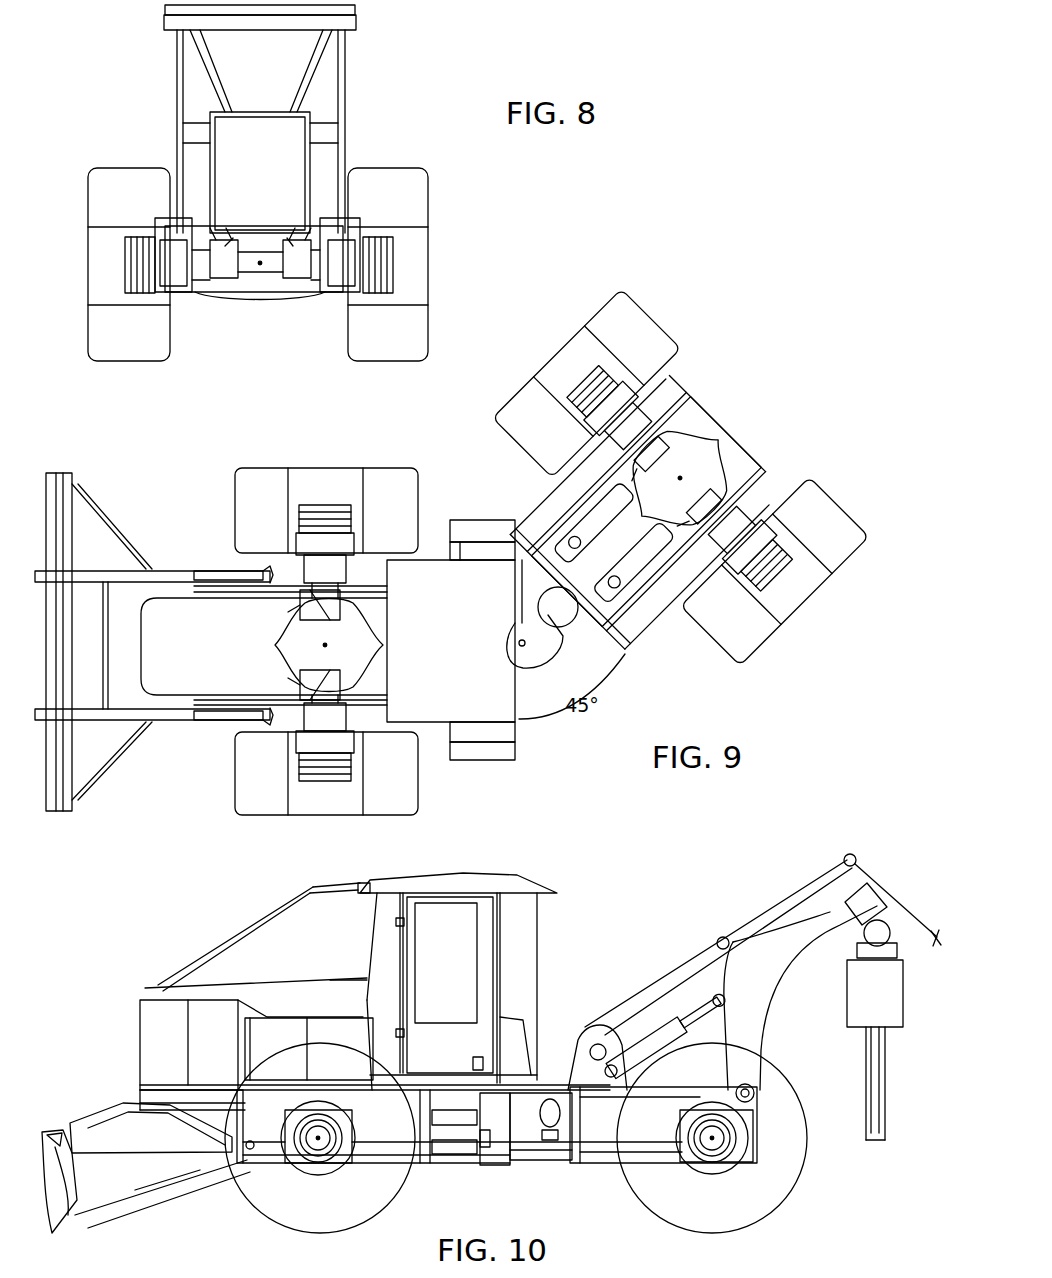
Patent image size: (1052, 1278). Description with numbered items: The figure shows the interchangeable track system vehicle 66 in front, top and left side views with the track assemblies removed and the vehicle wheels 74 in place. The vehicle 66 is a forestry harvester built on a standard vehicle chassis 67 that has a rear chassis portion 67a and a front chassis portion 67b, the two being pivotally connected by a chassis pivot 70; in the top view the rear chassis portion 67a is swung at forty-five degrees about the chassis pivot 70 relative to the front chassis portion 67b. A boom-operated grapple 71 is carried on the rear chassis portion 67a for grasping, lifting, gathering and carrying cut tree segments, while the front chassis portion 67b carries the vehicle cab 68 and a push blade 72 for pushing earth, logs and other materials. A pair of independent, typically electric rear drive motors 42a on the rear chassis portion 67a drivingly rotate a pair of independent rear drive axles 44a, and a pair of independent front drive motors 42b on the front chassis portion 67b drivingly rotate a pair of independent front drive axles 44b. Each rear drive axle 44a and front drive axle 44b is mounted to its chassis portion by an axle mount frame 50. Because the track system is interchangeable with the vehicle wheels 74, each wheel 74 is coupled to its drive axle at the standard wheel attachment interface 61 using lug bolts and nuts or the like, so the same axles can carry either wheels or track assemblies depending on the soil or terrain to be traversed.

In FIG. 9, the rear drive motor 42a is at (697, 445).
In FIG. 8, the front drive motor 42b is at (222, 238).
In FIG. 9, the front drive motor 42b is at (292, 615).
In FIG. 9, the rear drive axle 44a is at (662, 430).
In FIG. 8, the front drive axle 44b is at (205, 243).
In FIG. 9, the front drive axle 44b is at (336, 652).
In FIG. 8, the axle mount frame 50 is at (166, 213).
In FIG. 9, the axle mount frame 50 is at (365, 538).
In FIG. 10, the axle mount frame 50 is at (353, 1125).
In FIG. 8, the wheel attachment interface 61 is at (125, 264).
In FIG. 9, the wheel attachment interface 61 is at (324, 505).
In FIG. 10, the wheel attachment interface 61 is at (323, 1160).
In FIG. 8, the vehicle 66 is at (167, 80).
In FIG. 9, the vehicle 66 is at (85, 473).
In FIG. 10, the vehicle 66 is at (593, 873).
In FIG. 8, the vehicle chassis 67 is at (323, 210).
In FIG. 9, the vehicle chassis 67 is at (168, 582).
In FIG. 10, the vehicle chassis 67 is at (137, 1013).
In FIG. 9, the rear chassis portion 67a is at (630, 655).
In FIG. 10, the rear chassis portion 67a is at (652, 990).
In FIG. 8, the front chassis portion 67b is at (193, 220).
In FIG. 9, the front chassis portion 67b is at (178, 684).
In FIG. 10, the front chassis portion 67b is at (143, 1043).
In FIG. 8, the vehicle cab 68 is at (357, 13).
In FIG. 10, the vehicle cab 68 is at (230, 937).
In FIG. 9, the chassis pivot 70 is at (512, 655).
In FIG. 10, the chassis pivot 70 is at (526, 1126).
In FIG. 10, the boom-operated grapple 71 is at (758, 930).
In FIG. 9, the push blade 72 is at (66, 811).
In FIG. 10, the push blade 72 is at (90, 1117).
In FIG. 8, the vehicle wheel 74 is at (353, 342).
In FIG. 9, the vehicle wheel 74 is at (241, 487).
In FIG. 10, the vehicle wheel 74 is at (260, 1190).